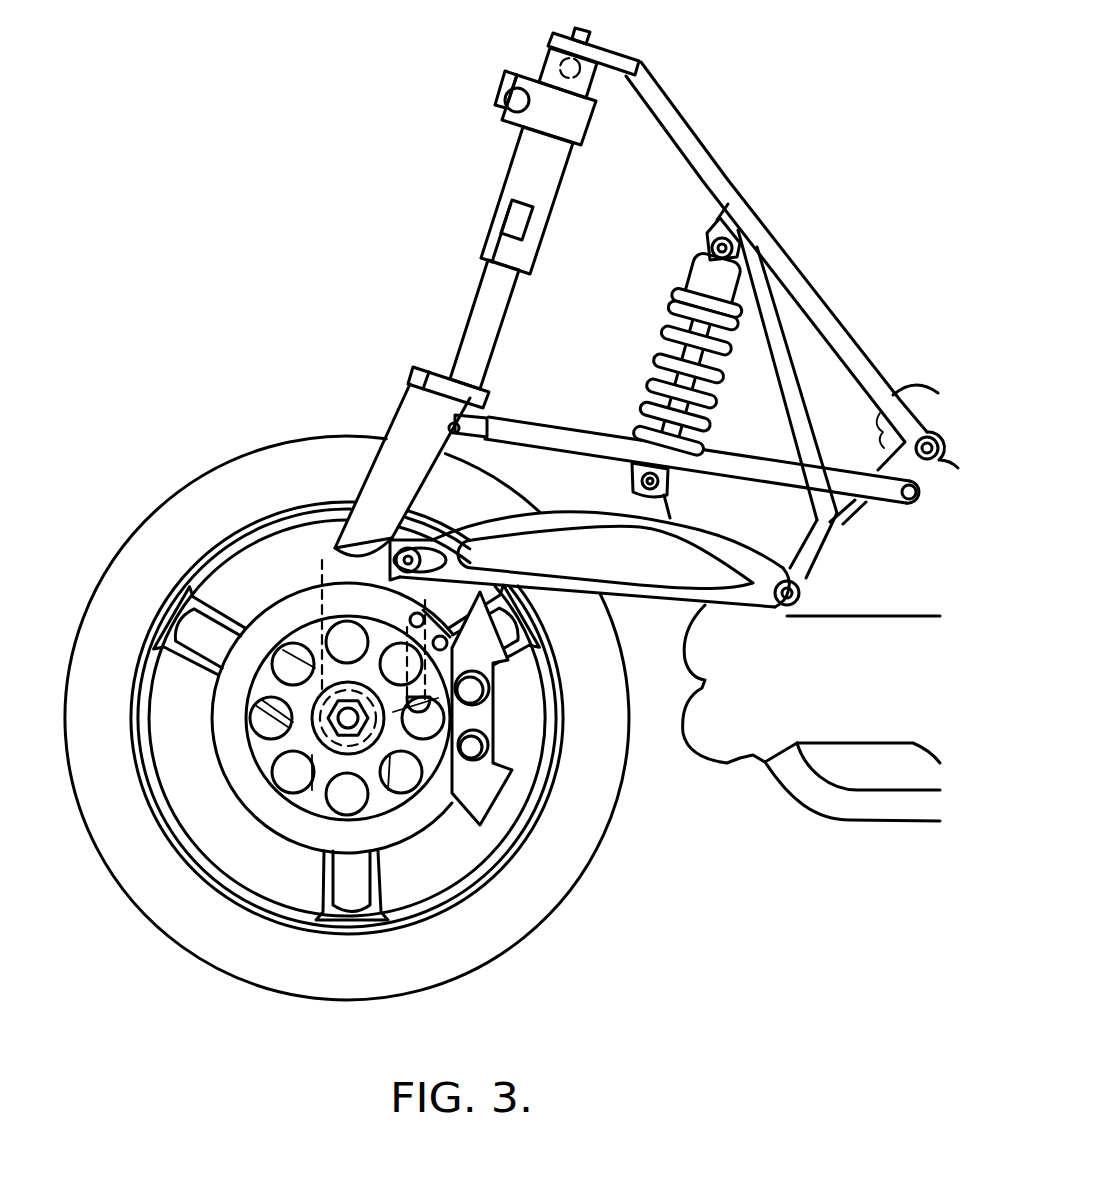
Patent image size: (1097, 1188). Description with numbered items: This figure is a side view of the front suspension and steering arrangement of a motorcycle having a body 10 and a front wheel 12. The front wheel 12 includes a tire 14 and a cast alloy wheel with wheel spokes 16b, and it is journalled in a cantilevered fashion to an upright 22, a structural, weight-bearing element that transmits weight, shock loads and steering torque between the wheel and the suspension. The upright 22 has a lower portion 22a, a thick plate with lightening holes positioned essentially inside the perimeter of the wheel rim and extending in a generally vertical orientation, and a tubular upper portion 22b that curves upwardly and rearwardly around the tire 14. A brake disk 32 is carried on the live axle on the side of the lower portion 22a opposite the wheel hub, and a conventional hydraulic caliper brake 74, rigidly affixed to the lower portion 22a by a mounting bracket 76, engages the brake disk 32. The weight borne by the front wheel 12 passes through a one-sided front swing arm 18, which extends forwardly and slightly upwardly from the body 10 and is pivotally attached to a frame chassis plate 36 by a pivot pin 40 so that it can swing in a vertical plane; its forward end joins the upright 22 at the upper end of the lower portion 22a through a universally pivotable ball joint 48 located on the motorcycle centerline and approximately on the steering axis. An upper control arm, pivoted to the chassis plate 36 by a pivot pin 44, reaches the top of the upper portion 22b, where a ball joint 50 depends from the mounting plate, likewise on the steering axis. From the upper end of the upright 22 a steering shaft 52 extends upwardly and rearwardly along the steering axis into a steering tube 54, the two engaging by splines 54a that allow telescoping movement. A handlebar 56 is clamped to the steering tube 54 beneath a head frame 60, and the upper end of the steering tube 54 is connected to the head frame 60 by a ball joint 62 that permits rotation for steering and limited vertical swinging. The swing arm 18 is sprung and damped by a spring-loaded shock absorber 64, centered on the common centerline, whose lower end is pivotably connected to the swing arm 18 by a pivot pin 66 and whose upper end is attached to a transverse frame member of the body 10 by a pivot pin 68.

The body 10 is at (910, 368).
The front wheel 12 is at (622, 851).
The tire 14 is at (347, 718).
The wheel spokes 16b is at (306, 755).
The one-sided front swing arm 18 is at (658, 616).
The upright 22 is at (388, 384).
The lower portion of the upright 22a is at (344, 634).
The upper portion of the upright 22b is at (384, 398).
The brake disk 32 is at (370, 795).
The frame chassis plate 36 is at (811, 711).
The pivot pin 40 is at (766, 623).
The pivot pin 44 is at (908, 500).
The ball joint 48 is at (473, 519).
The ball joint 50 is at (679, 441).
The steering shaft 52 is at (469, 324).
The steering tube 54 is at (505, 200).
The splines 54a is at (476, 222).
The handlebar 56 is at (519, 108).
The head frame 60 is at (753, 289).
The ball joint 62 is at (536, 57).
The spring-loaded shock absorber 64 is at (643, 326).
The pivot pin 66 is at (685, 490).
The pivot pin 68 is at (757, 210).
The hydraulic caliper brake 74 is at (561, 708).
The mounting bracket 76 is at (556, 750).